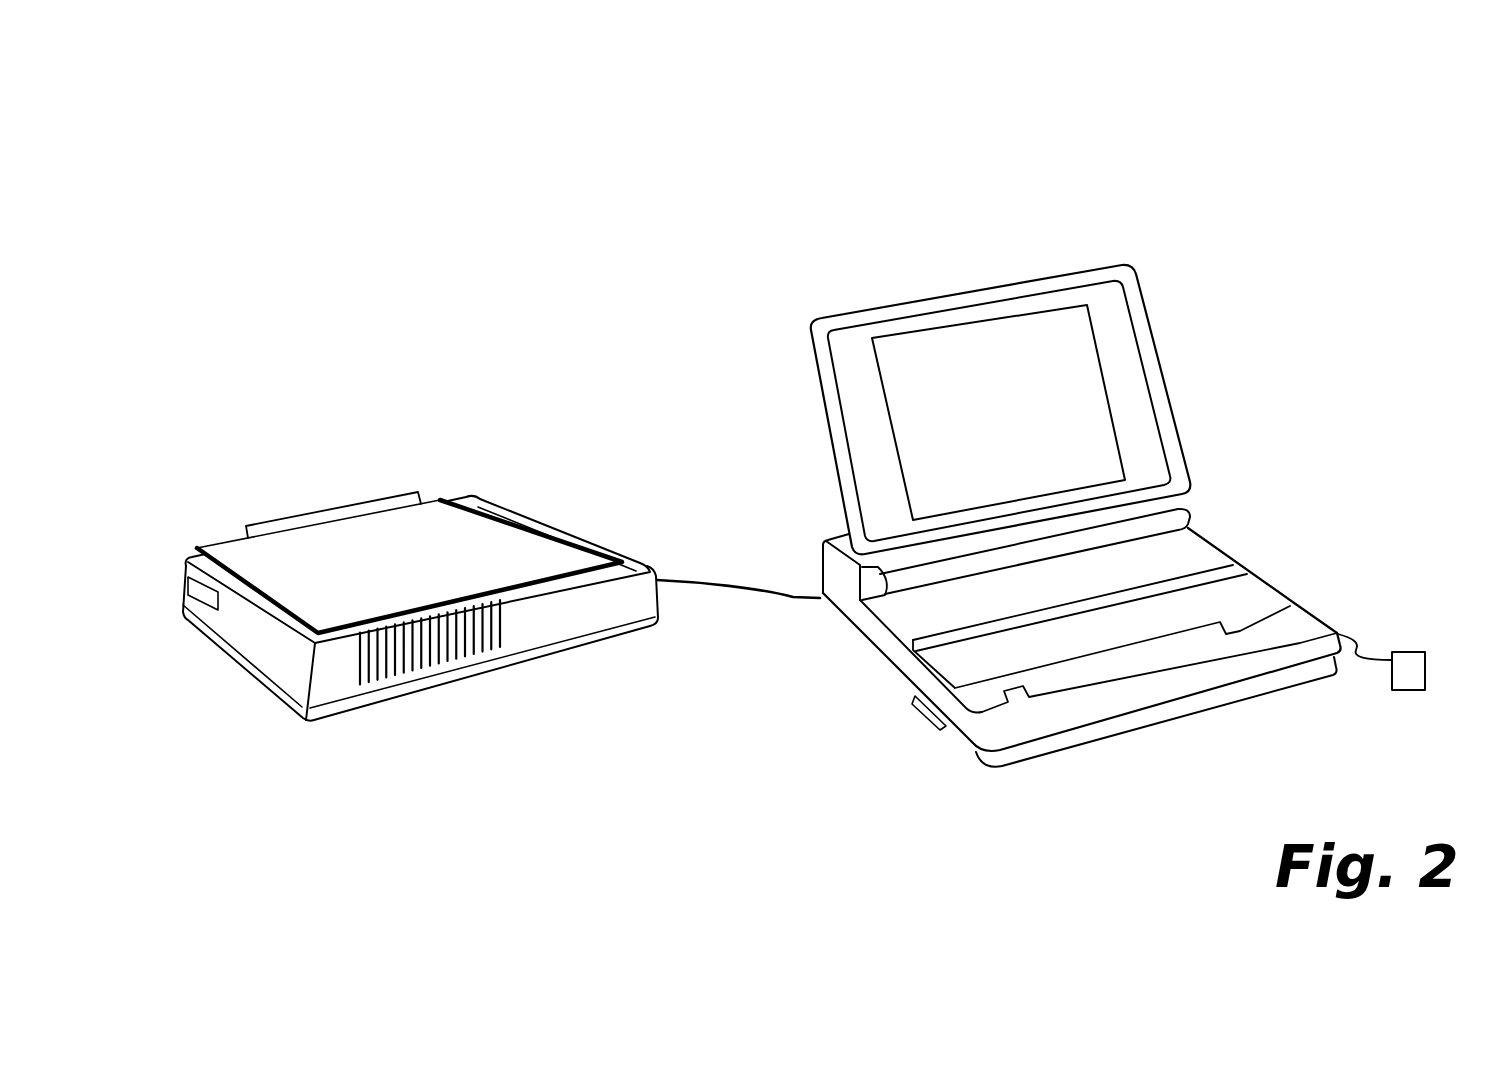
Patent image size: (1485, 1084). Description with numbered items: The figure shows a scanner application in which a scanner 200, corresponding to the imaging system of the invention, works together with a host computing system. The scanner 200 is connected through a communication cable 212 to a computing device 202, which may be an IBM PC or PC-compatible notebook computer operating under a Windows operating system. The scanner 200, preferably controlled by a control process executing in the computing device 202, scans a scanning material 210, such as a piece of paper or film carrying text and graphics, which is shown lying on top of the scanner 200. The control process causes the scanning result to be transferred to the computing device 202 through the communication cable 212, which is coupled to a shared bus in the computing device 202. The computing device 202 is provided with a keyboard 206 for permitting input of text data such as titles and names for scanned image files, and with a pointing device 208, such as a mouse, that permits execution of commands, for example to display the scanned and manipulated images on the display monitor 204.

The scanner 200 is at (547, 489).
The computing device 202 is at (1002, 229).
The display monitor 204 is at (1027, 327).
The keyboard 206 is at (1268, 591).
The pointing device 208 is at (1410, 678).
The scanning material 210 is at (270, 527).
The communication cable 212 is at (683, 570).